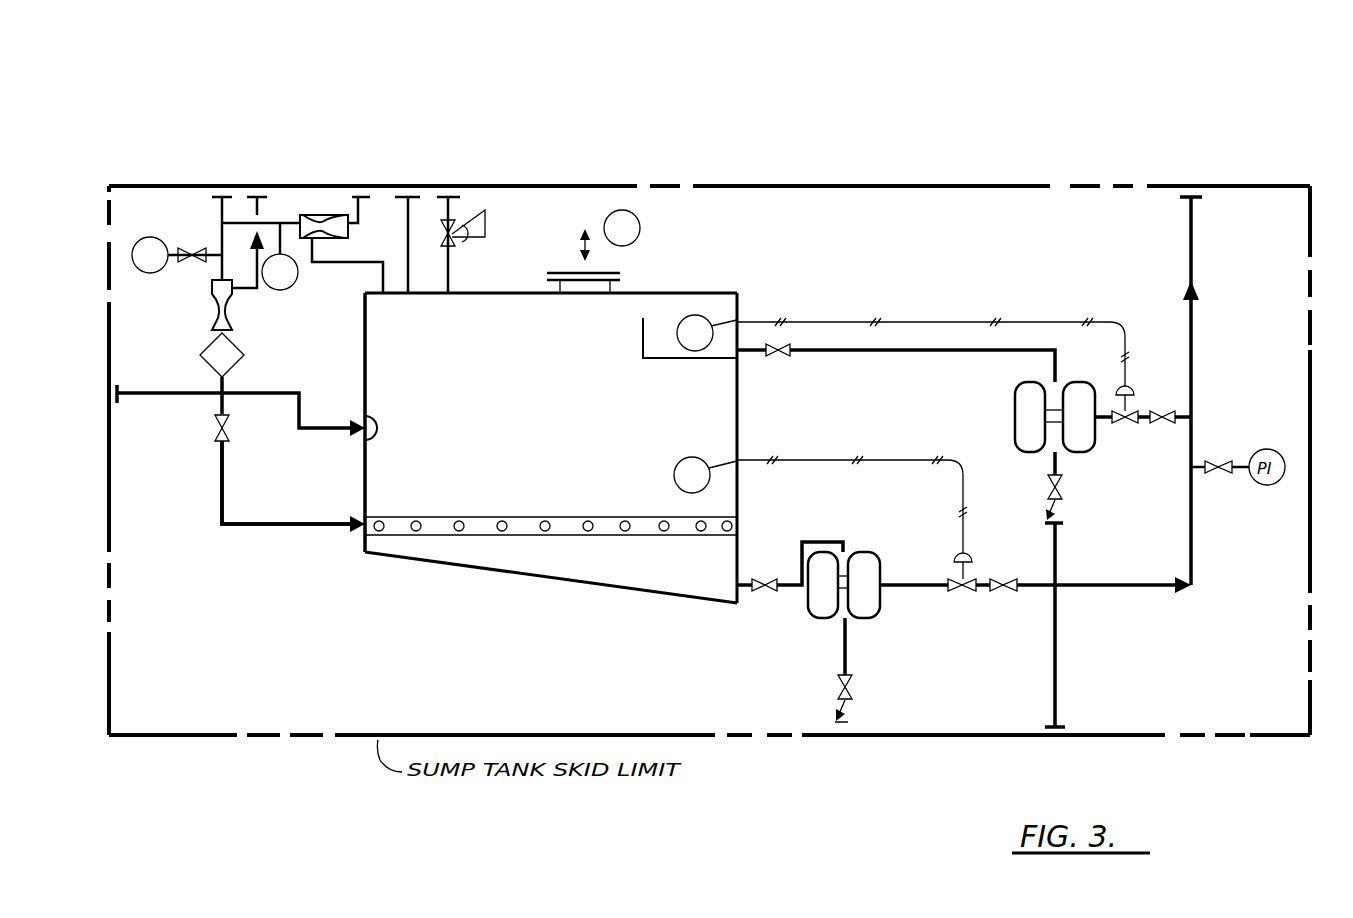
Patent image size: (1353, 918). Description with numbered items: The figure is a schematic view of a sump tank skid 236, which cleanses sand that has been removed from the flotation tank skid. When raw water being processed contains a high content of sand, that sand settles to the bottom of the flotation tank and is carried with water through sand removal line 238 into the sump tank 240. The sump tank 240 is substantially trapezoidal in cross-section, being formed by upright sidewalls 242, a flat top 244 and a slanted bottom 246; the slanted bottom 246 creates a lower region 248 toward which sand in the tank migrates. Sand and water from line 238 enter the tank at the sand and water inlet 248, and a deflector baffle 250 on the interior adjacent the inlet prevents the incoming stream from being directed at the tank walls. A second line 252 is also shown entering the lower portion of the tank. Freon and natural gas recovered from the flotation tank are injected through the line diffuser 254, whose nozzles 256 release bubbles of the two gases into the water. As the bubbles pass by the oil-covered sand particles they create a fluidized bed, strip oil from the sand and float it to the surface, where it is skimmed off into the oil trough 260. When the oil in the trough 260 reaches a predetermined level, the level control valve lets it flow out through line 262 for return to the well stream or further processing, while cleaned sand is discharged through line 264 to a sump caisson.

The sump tank skid 236 is at (814, 155).
The sand removal line 238 is at (148, 382).
The sump tank 240 is at (556, 420).
The upright sidewalls 242 is at (365, 324).
The flat top 244 is at (468, 293).
The slanted bottom 246 is at (545, 580).
The lower region / sand and water inlet 248 is at (358, 392).
The deflector baffle 250 is at (378, 416).
The lower inlet line 252 is at (312, 522).
The line diffuser 254 is at (612, 525).
The nozzles 256 is at (545, 516).
The oil trough 260 is at (643, 345).
The oil line 262 is at (838, 352).
The cleaned sand line 264 is at (790, 592).